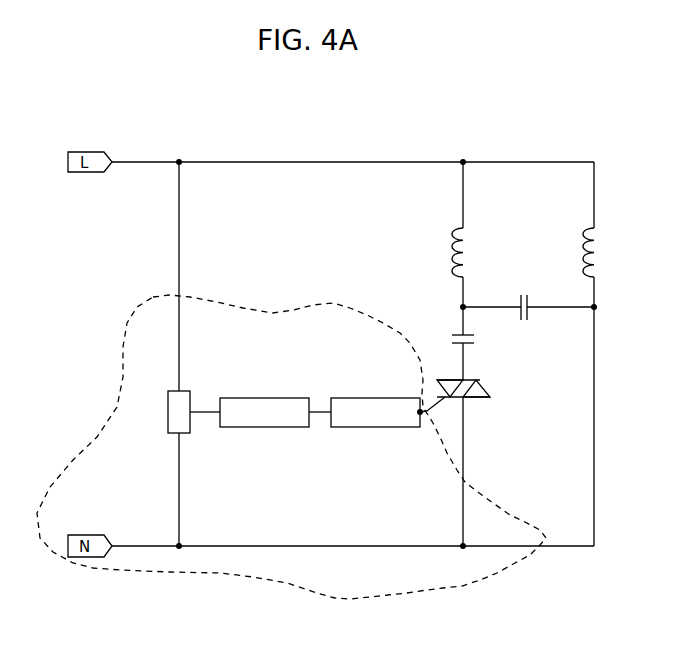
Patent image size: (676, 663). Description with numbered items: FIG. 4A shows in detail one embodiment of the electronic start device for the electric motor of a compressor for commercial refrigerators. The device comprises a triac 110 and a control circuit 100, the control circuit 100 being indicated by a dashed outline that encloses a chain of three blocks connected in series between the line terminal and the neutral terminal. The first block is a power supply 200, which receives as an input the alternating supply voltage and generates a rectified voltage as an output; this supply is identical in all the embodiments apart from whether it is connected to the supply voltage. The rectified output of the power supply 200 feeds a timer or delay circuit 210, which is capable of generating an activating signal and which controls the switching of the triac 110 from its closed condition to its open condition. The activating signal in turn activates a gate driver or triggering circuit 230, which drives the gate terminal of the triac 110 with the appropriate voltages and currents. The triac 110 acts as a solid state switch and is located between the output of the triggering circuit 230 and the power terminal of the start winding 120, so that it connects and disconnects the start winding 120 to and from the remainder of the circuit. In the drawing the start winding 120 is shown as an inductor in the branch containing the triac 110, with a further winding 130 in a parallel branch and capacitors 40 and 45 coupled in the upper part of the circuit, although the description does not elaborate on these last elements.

The control circuit 100 is at (405, 577).
The triac 110 is at (478, 400).
The start winding 120 is at (452, 242).
The second inductor 130 is at (597, 250).
The capacitor 40 is at (537, 292).
The capacitor 45 is at (478, 348).
The power supply 200 is at (176, 405).
The timer circuit 210 is at (270, 412).
The gate driver circuit 230 is at (358, 412).